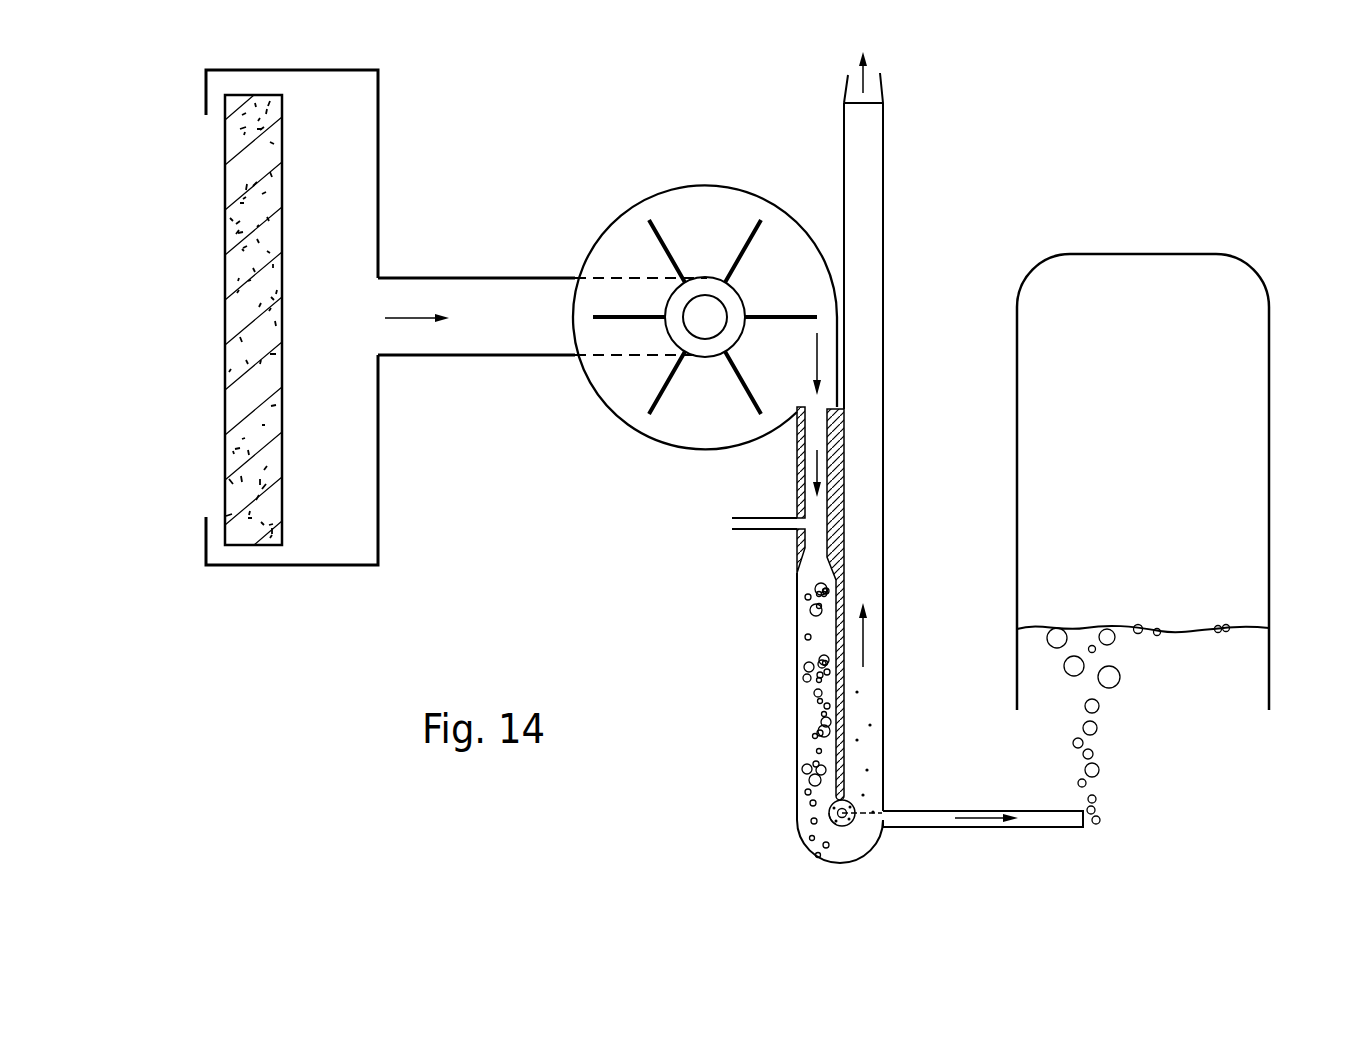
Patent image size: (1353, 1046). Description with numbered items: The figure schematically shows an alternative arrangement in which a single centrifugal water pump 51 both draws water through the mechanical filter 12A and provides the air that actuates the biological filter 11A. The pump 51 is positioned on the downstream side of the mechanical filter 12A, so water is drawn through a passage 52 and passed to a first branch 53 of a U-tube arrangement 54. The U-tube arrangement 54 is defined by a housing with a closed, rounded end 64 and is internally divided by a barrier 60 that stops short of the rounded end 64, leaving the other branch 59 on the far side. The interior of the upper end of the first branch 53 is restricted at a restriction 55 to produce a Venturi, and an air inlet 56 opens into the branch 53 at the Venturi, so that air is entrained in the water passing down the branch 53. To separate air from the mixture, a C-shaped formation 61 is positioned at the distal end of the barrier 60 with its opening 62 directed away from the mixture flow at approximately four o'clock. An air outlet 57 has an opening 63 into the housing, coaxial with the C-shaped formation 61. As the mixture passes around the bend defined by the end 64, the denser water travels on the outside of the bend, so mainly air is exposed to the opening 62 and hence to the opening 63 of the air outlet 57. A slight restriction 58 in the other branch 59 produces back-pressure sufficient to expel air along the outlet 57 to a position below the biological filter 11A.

The biological filter 11A is at (1262, 457).
The mechanical filter 12A is at (203, 347).
The centrifugal water pump 51 is at (668, 210).
The passage 52 is at (505, 288).
The first branch 53 is at (797, 688).
The U-tube arrangement 54 is at (786, 838).
The restriction 55 is at (797, 473).
The air inlet 56 is at (752, 528).
The air outlet 57 is at (975, 806).
The restriction 58 is at (845, 103).
The other branch 59 is at (875, 235).
The barrier 60 is at (840, 729).
The C-shaped formation 61 is at (836, 824).
The opening 62 is at (851, 826).
The opening 63 is at (851, 801).
The rounded end 64 is at (823, 863).